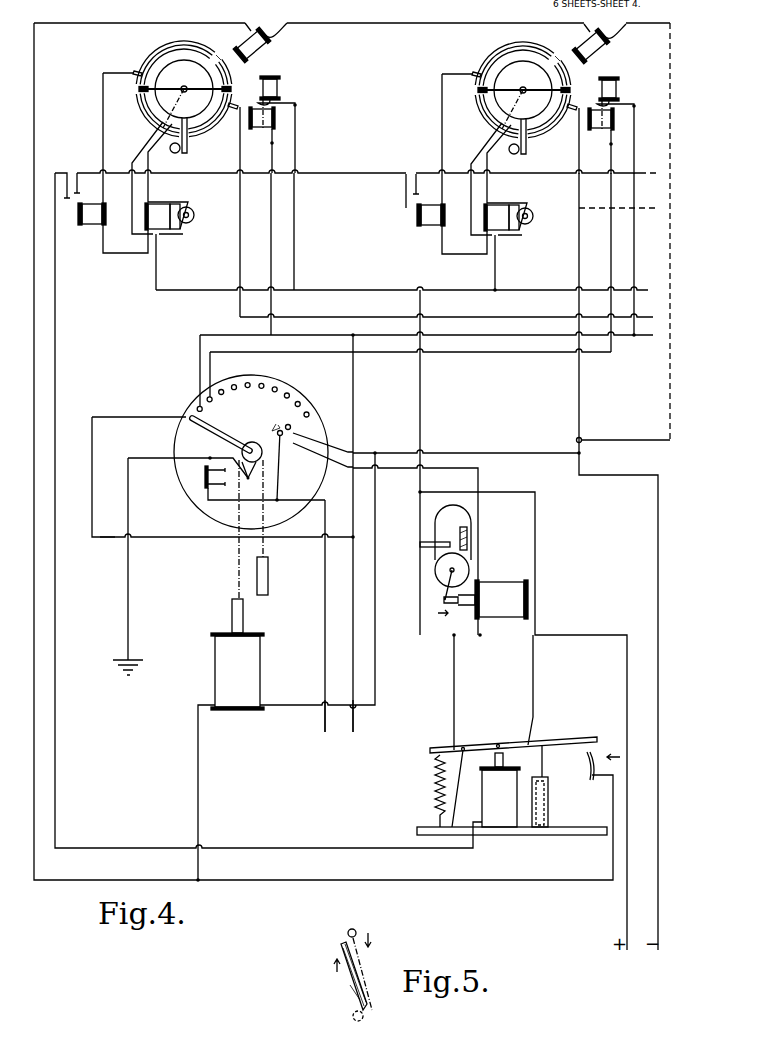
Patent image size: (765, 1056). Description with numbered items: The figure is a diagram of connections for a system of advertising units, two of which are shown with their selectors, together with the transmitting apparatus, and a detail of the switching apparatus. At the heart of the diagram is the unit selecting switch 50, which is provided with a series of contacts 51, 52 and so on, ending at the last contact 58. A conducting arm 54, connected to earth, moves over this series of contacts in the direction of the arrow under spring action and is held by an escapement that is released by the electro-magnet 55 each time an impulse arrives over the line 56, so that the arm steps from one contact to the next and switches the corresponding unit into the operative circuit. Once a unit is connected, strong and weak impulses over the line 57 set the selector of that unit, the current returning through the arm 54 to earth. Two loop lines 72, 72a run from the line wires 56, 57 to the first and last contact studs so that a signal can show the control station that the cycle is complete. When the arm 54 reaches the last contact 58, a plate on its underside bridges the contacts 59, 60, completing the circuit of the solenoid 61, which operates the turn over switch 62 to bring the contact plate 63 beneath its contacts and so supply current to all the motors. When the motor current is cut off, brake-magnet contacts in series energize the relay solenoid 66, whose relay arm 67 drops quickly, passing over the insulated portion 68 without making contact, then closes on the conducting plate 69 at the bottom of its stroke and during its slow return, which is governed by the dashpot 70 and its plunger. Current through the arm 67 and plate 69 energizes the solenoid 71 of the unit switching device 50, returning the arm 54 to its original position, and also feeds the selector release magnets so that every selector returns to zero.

In FIG. 4, the unit selecting switch 50 is at (186, 412).
In FIG. 4, the contact 51 is at (203, 408).
In FIG. 4, the contact 52 is at (211, 397).
In FIG. 4, the conducting arm 54 is at (205, 432).
In FIG. 4, the electro-magnet 55 is at (205, 475).
In FIG. 4, the line 56 is at (322, 733).
In FIG. 4, the line 57 is at (356, 733).
In FIG. 4, the last contact 58 is at (295, 435).
In FIG. 4, the contact 59 is at (280, 436).
In FIG. 4, the contact 60 is at (289, 424).
In FIG. 4, the solenoid 61 is at (503, 592).
In FIG. 4, the turn over switch 62 is at (472, 515).
In FIG. 4, the contact plate 63 is at (467, 540).
In FIG. 4, the relay solenoid 66 is at (497, 812).
In FIG. 4, the relay arm 67 is at (567, 740).
In FIG. 5, the relay arm 67 is at (353, 928).
In FIG. 5, the insulated portion 68 is at (368, 973).
In FIG. 4, the conducting plate 69 is at (590, 781).
In FIG. 5, the conducting plate 69 is at (345, 990).
In FIG. 4, the dashpot 70 is at (550, 812).
In FIG. 4, the solenoid 71 is at (215, 672).
In FIG. 4, the loop line 72 is at (300, 470).
In FIG. 4, the loop line 72a is at (107, 540).